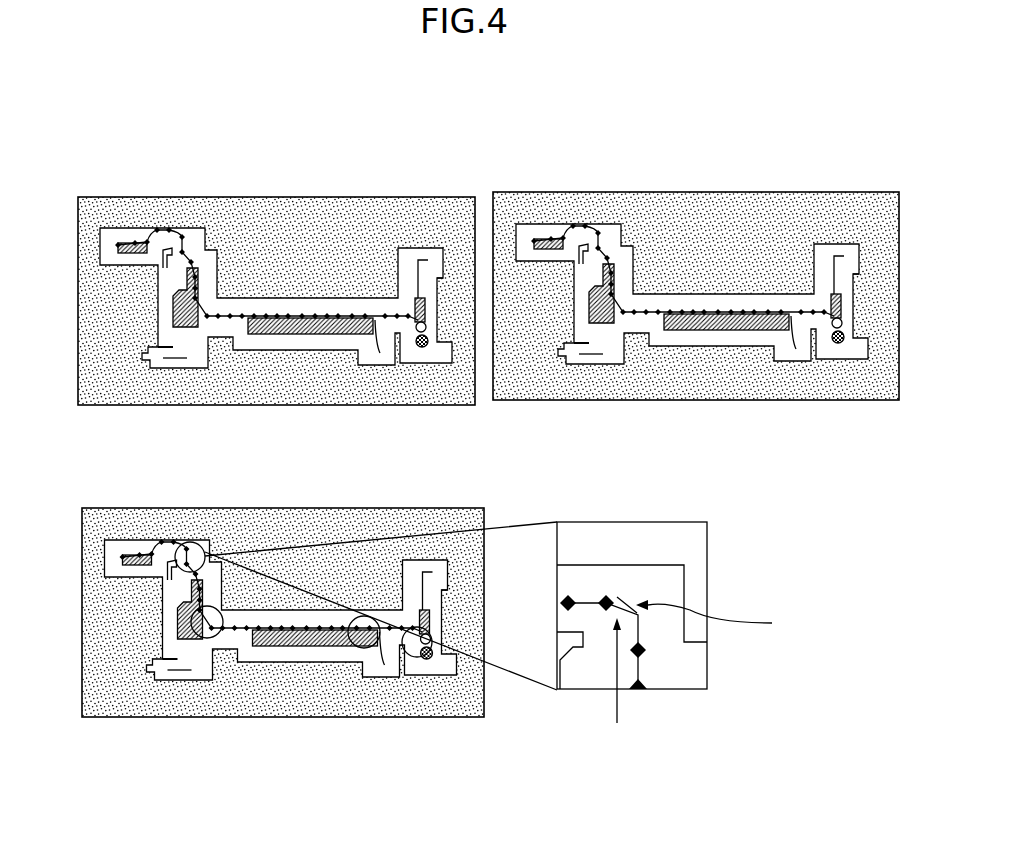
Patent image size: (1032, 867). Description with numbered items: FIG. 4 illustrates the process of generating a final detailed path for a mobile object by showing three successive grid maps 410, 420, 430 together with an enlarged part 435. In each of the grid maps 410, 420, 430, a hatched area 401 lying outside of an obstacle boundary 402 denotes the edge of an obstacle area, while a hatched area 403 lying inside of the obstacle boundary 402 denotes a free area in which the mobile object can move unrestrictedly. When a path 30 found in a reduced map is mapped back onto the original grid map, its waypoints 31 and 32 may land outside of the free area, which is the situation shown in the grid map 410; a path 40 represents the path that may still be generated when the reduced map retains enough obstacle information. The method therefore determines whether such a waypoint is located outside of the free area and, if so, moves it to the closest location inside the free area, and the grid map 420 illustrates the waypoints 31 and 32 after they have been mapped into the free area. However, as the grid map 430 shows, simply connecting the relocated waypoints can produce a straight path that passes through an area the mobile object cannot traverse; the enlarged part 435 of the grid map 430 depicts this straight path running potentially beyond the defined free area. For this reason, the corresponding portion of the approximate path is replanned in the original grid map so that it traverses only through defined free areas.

The path 30 is at (122, 238).
The waypoint 31 is at (157, 228).
The waypoint 32 is at (170, 228).
The path 40 is at (421, 321).
The hatched area 401 is at (309, 197).
The obstacle boundary 402 is at (100, 266).
The hatched area 403 is at (315, 320).
The grid map 410 is at (458, 197).
The grid map 420 is at (862, 192).
The grid map 430 is at (462, 508).
The enlarged part 435 is at (686, 522).